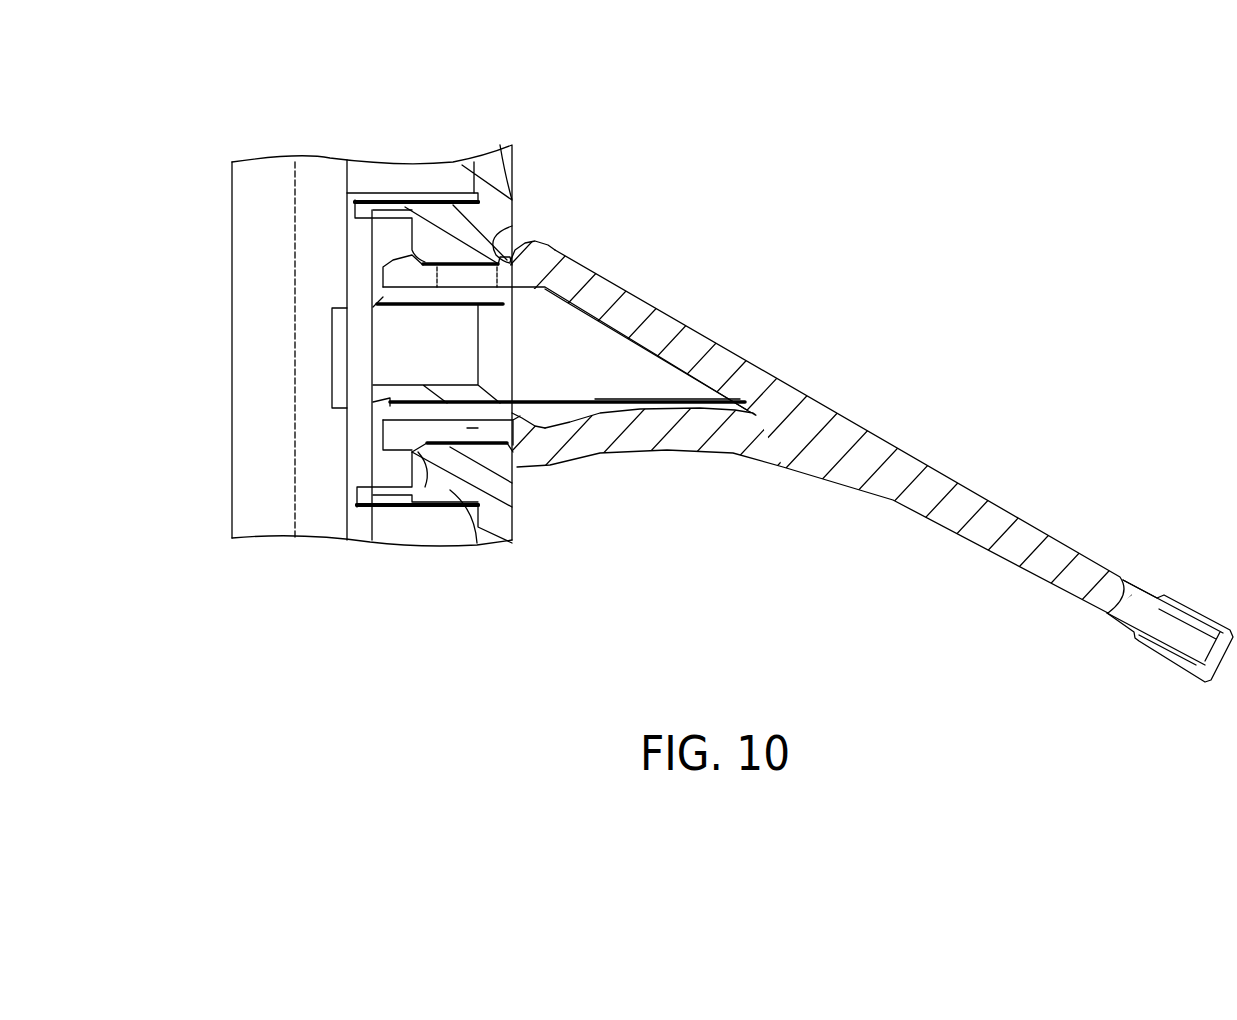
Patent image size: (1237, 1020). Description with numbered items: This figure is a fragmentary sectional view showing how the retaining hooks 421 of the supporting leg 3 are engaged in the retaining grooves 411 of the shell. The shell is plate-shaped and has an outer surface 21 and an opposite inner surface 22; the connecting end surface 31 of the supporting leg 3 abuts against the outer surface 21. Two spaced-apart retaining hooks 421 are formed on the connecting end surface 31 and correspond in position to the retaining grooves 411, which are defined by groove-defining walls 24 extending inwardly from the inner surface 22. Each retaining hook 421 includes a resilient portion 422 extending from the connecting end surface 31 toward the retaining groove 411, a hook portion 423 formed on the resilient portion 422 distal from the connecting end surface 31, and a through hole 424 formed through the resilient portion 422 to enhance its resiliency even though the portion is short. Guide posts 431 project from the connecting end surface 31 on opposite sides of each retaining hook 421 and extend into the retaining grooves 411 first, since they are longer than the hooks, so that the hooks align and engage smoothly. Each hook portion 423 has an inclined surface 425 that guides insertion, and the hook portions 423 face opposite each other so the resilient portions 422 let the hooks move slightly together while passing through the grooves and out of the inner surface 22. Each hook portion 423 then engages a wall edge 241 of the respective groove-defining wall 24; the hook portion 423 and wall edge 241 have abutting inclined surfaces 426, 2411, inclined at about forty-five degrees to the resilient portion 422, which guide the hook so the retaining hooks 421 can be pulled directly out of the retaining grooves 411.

The supporting leg 3 is at (870, 383).
The outer surface 21 is at (513, 200).
The inner surface 22 is at (473, 523).
The groove-defining wall 24 is at (447, 262).
The connecting end surface 31 is at (505, 262).
The wall edge 241 is at (408, 255).
The retaining groove 411 is at (480, 300).
The retaining hook 421 is at (440, 413).
The resilient portion 422 is at (383, 416).
The hook portion 423 is at (400, 434).
The through hole 424 is at (467, 428).
The inclined surface 425 is at (418, 452).
The inclined surface 426 is at (417, 253).
The inclined surface 2411 is at (416, 353).
The guide post 431 is at (393, 297).